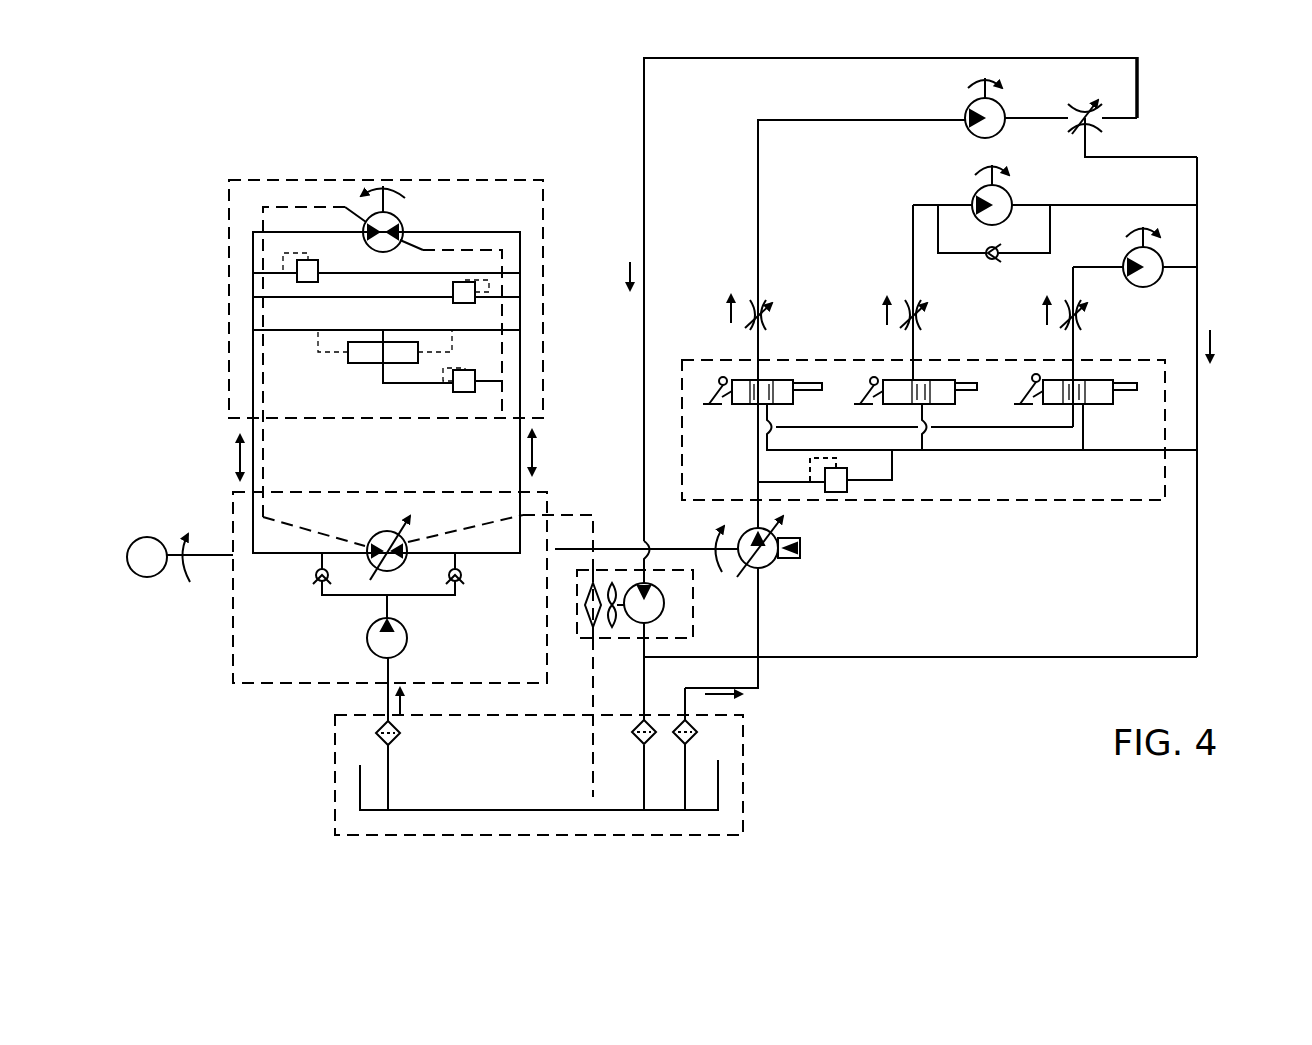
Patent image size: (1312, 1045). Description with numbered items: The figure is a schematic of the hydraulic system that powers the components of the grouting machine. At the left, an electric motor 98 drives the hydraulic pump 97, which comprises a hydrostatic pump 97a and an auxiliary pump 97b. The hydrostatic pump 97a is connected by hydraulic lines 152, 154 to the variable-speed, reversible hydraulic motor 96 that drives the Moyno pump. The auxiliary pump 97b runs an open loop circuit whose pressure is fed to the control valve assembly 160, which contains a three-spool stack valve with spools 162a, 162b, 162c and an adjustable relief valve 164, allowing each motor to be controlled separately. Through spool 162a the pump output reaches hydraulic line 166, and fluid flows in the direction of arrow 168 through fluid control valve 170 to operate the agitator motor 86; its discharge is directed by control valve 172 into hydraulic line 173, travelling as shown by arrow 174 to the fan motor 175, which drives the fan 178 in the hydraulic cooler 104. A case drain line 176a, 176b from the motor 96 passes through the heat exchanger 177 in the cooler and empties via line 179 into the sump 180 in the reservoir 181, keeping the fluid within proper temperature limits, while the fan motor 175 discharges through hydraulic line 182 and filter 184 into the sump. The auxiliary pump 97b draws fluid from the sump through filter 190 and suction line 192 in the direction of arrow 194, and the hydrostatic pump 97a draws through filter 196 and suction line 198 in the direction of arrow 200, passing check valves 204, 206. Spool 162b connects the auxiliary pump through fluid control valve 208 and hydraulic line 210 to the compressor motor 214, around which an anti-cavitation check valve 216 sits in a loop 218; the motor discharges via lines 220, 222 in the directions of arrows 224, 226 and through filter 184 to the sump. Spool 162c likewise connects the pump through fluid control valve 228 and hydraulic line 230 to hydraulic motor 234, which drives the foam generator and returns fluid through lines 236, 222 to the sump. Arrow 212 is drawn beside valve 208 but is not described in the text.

The agitator motor 86 is at (965, 112).
The hydraulic motor 96 is at (400, 222).
The hydraulic pump 97 is at (232, 651).
The hydrostatic pump 97a is at (372, 532).
The auxiliary pump 97b is at (790, 568).
The electric motor 98 is at (142, 537).
The hydraulic cooler 104 is at (690, 638).
The hydraulic line 152 is at (528, 440).
The hydraulic line 154 is at (237, 433).
The control valve assembly 160 is at (1030, 504).
The spool 162a is at (743, 406).
The spool 162b is at (906, 378).
The spool 162c is at (1108, 406).
The adjustable relief valve 164 is at (850, 493).
The hydraulic line 166 is at (757, 150).
The arrow 168 is at (729, 298).
The fluid control valve 170 is at (770, 326).
The control valve 172 is at (1105, 126).
The hydraulic line 173 is at (640, 98).
The arrow 174 is at (629, 268).
The fan motor 175 is at (664, 606).
The case drain line 176a is at (270, 450).
The case drain line 176b is at (590, 514).
The heat exchanger 177 is at (590, 630).
The fan 178 is at (614, 630).
The line 179 is at (592, 740).
The sump 180 is at (720, 763).
The reservoir 181 is at (745, 808).
The hydraulic line 182 is at (642, 664).
The filter 184 is at (641, 746).
The filter 190 is at (698, 735).
The suction line 192 is at (770, 582).
The arrow 194 is at (740, 700).
The filter 196 is at (399, 736).
The suction line 198 is at (386, 692).
The arrow 200 is at (405, 706).
The check valve 204 is at (314, 583).
The check valve 206 is at (463, 583).
The fluid control valve 208 is at (925, 322).
The hydraulic line 210 is at (912, 232).
The flow direction arrow 212 is at (885, 300).
The hydraulic motor 214 is at (972, 200).
The anti-cavitation check valve 216 is at (985, 260).
The loop 218 is at (1052, 234).
The line 220 is at (1115, 203).
The line 222 is at (1198, 292).
The arrow 224 is at (1210, 330).
The arrow 226 is at (926, 650).
The fluid control valve 228 is at (1085, 326).
The hydraulic line 230 is at (1062, 276).
The hydraulic motor 234 is at (1138, 288).
The line 236 is at (1195, 256).